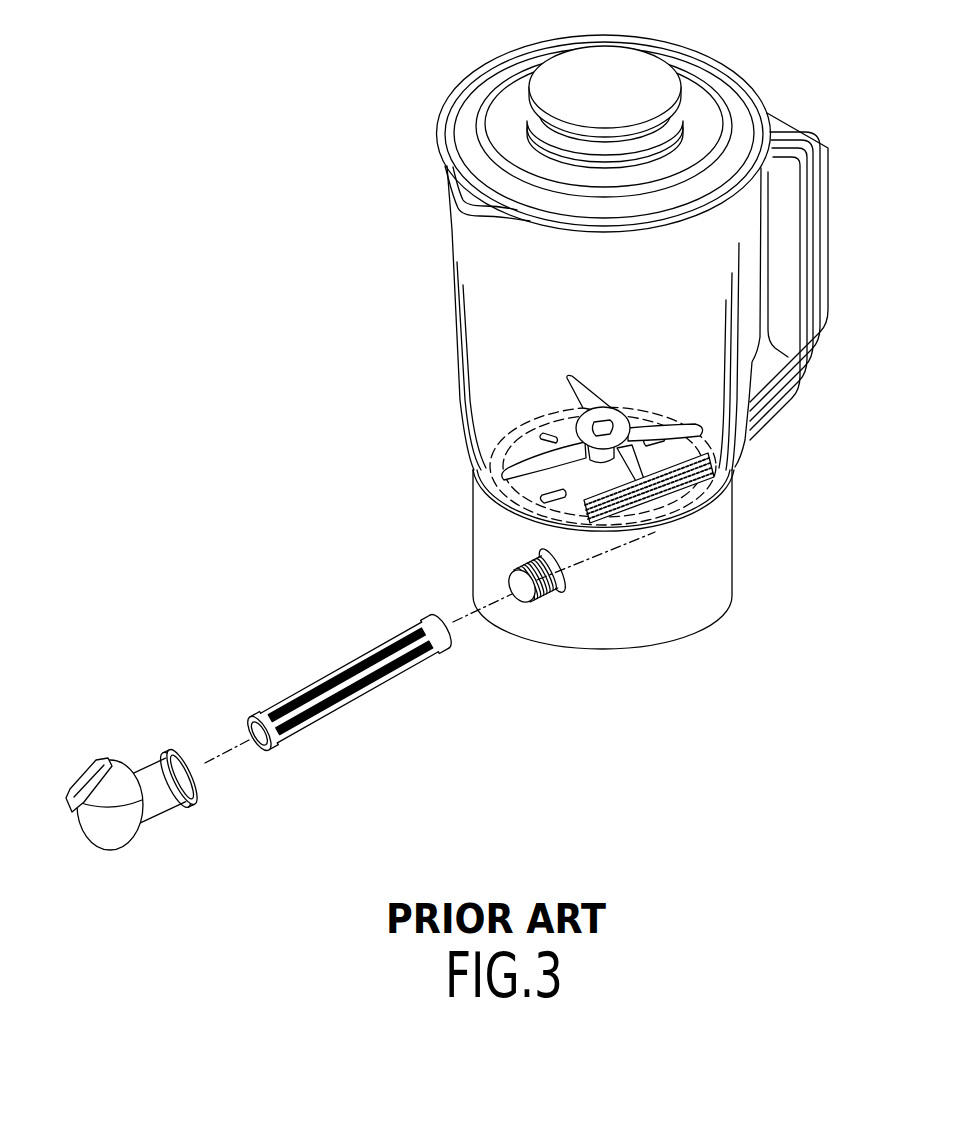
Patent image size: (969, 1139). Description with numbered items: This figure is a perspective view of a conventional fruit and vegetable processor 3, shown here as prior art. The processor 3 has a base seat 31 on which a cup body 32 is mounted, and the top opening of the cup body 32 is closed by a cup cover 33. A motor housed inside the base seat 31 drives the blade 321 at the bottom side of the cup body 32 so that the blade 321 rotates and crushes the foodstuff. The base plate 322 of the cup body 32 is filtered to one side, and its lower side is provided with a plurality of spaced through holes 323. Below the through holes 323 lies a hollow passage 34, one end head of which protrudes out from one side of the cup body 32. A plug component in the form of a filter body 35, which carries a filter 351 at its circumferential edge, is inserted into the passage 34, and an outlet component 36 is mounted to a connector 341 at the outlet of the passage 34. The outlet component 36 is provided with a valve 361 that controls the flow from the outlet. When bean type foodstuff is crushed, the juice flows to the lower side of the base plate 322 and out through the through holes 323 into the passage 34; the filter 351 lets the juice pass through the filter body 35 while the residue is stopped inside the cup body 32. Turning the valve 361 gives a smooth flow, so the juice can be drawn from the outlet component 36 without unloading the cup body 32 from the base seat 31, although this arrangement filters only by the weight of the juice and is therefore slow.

The processor 3 is at (222, 157).
The base seat 31 is at (717, 594).
The cup body 32 is at (450, 292).
The cup cover 33 is at (512, 135).
The blade 321 is at (508, 477).
The base plate 322 is at (500, 440).
The through holes 323 is at (708, 461).
The hollow passage 34 is at (607, 553).
The connector 341 is at (548, 600).
The filter body 35 is at (303, 673).
The filter 351 is at (355, 690).
The outlet component 36 is at (135, 753).
The valve 361 is at (84, 773).